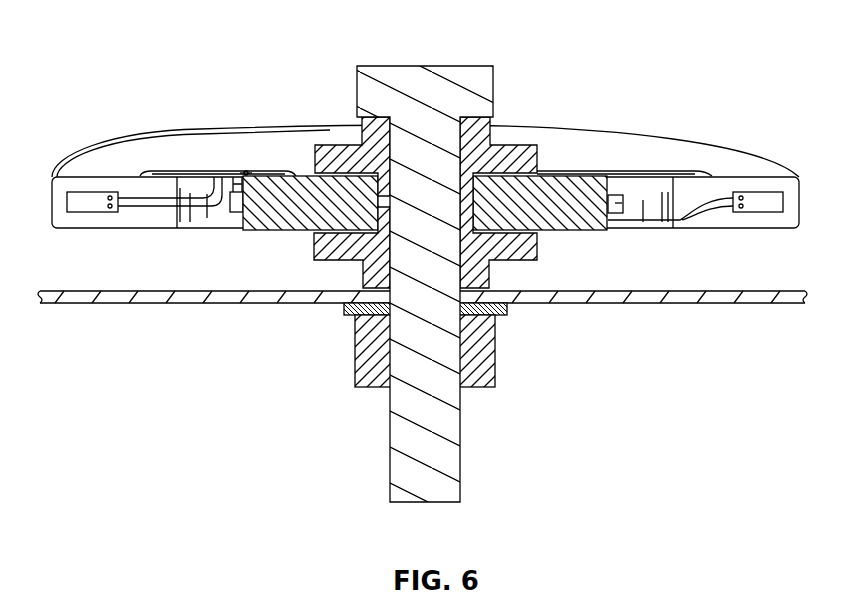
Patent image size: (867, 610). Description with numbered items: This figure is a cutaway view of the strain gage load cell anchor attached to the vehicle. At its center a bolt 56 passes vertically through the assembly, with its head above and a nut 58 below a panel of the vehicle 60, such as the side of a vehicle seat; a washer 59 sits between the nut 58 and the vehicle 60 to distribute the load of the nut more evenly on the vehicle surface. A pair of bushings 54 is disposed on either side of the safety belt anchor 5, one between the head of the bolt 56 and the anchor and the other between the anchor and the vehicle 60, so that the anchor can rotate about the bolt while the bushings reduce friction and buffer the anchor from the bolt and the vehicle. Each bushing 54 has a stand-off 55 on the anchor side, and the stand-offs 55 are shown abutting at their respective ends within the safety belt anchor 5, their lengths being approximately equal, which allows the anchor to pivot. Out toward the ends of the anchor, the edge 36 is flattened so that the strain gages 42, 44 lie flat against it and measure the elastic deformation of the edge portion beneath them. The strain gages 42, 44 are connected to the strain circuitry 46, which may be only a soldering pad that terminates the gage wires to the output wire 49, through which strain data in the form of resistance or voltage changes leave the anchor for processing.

The safety belt anchor 5 is at (664, 130).
The edge 36 is at (73, 222).
The strain gage 42 is at (103, 208).
The strain gage 44 is at (622, 213).
The strain circuitry 46 is at (230, 176).
The output wire 49 is at (246, 172).
The bushing 54 is at (509, 145).
The stand-off 55 is at (468, 218).
The bolt 56 is at (428, 66).
The nut 58 is at (495, 370).
The washer 59 is at (344, 311).
The vehicle 60 is at (748, 303).